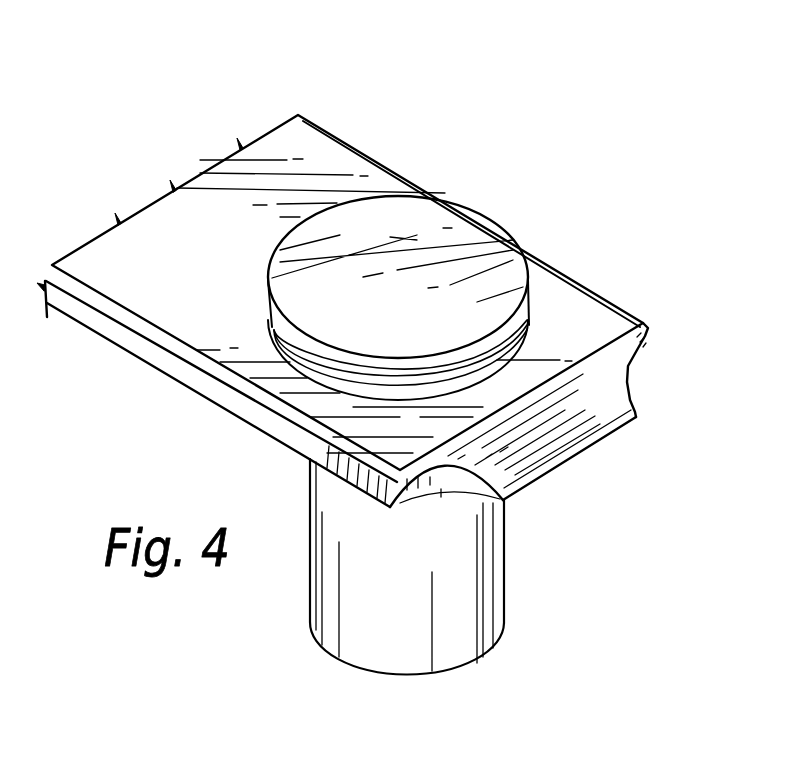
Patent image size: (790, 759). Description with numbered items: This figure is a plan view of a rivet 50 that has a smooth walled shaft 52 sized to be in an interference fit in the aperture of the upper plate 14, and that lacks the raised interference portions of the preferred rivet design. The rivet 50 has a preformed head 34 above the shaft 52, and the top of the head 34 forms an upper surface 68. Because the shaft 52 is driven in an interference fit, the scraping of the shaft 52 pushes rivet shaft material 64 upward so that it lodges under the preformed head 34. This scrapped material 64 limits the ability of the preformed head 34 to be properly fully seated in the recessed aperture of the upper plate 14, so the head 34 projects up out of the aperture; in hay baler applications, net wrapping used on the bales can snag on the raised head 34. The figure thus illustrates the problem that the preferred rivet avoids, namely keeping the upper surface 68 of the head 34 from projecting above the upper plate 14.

The upper plate 14 is at (322, 157).
The rivet 50 is at (487, 229).
The upper surface 68 is at (413, 243).
The preformed head 34 is at (487, 229).
The rivet shaft material 64 is at (533, 352).
The shaft 52 is at (485, 578).